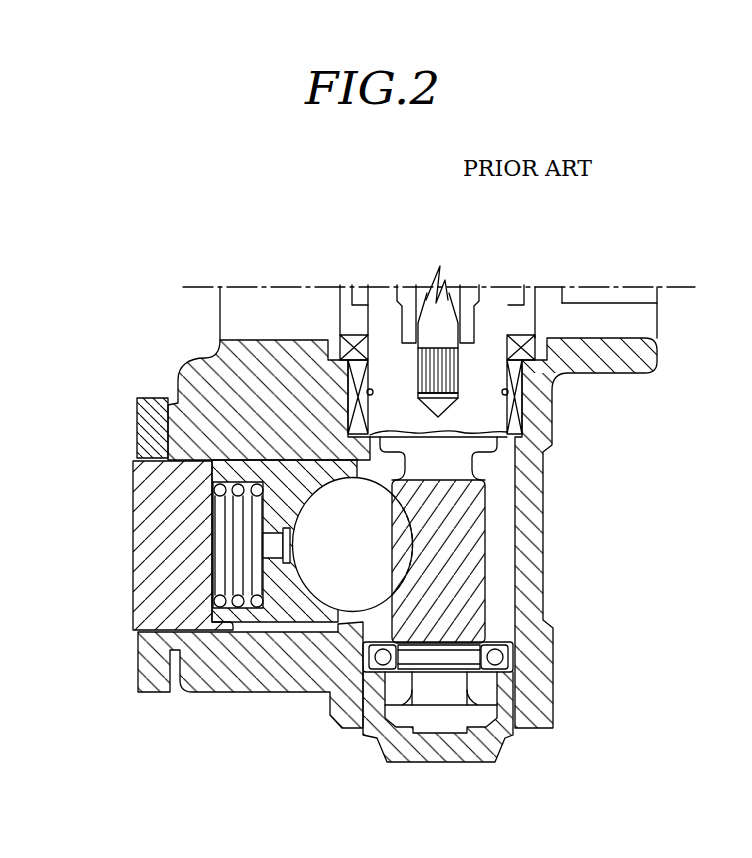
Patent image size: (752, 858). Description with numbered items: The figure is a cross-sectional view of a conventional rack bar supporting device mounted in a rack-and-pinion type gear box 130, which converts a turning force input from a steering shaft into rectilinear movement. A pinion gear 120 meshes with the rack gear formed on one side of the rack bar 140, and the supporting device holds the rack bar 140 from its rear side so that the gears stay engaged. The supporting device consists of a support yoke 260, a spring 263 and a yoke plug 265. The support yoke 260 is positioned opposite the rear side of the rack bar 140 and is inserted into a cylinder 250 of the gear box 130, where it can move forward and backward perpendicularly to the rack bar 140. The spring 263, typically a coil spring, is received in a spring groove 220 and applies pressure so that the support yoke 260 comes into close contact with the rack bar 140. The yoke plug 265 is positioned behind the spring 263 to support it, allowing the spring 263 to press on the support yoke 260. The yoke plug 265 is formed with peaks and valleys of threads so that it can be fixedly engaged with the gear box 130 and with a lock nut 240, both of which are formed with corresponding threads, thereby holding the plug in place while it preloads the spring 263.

The pinion gear 120 is at (470, 542).
The rack-and-pinion type gear box 130 is at (192, 372).
The rack bar 140 is at (367, 568).
The spring groove 220 is at (237, 608).
The lock nut 240 is at (139, 658).
The cylinder 250 is at (290, 620).
The support yoke 260 is at (303, 460).
The spring 263 is at (222, 460).
The yoke plug 265 is at (145, 530).